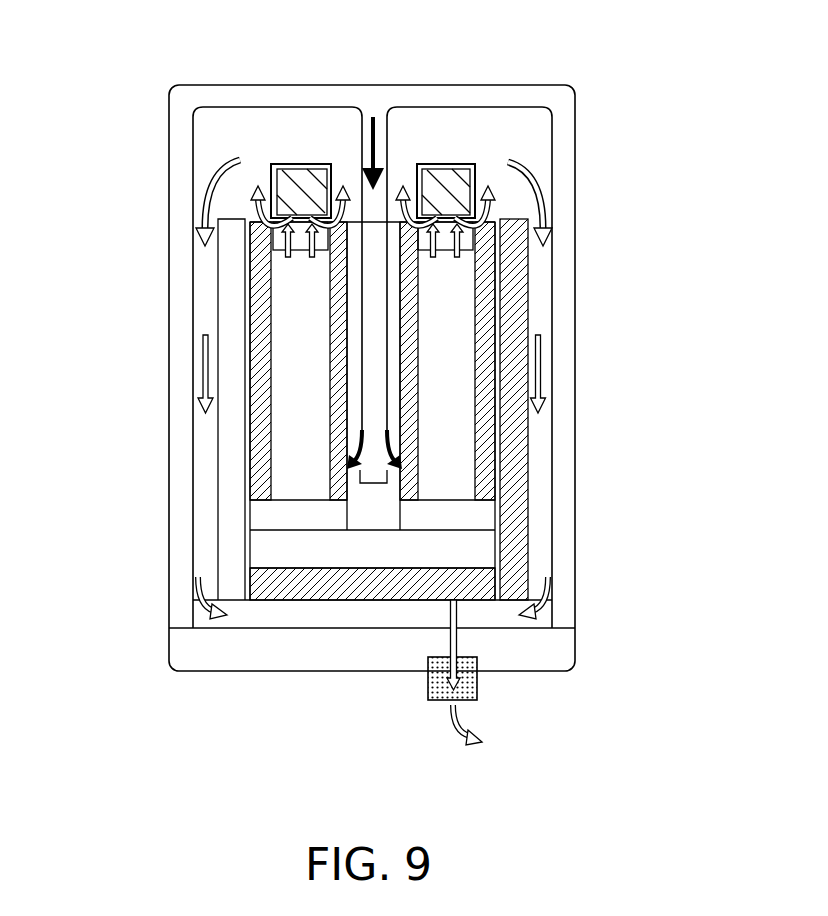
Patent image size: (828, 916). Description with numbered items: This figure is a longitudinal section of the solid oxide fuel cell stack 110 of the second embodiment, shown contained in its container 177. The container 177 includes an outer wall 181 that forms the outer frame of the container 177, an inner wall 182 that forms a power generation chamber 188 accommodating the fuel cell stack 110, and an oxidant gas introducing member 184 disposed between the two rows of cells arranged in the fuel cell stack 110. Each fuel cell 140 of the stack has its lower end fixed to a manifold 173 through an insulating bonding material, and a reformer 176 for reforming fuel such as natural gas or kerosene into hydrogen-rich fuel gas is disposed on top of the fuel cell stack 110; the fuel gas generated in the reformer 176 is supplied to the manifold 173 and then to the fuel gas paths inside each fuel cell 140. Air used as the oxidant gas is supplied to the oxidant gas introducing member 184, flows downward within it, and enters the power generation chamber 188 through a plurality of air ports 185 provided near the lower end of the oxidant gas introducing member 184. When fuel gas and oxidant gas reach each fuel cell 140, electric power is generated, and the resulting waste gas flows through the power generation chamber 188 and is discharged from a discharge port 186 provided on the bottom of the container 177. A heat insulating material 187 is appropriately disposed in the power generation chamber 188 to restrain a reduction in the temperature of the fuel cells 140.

The reformer 176 is at (303, 152).
The oxidant gas introducing member 184 is at (390, 148).
The inner wall 182 is at (550, 107).
The power generation chamber 188 is at (237, 128).
The outer wall 181 is at (572, 247).
The fuel cell 140 is at (295, 350).
The solid oxide fuel cell stack 110 is at (372, 411).
The container 177 is at (153, 352).
The heat insulating material 187 is at (480, 587).
The air port 185 is at (357, 472).
The manifold 173 is at (263, 522).
The discharge port 186 is at (480, 690).